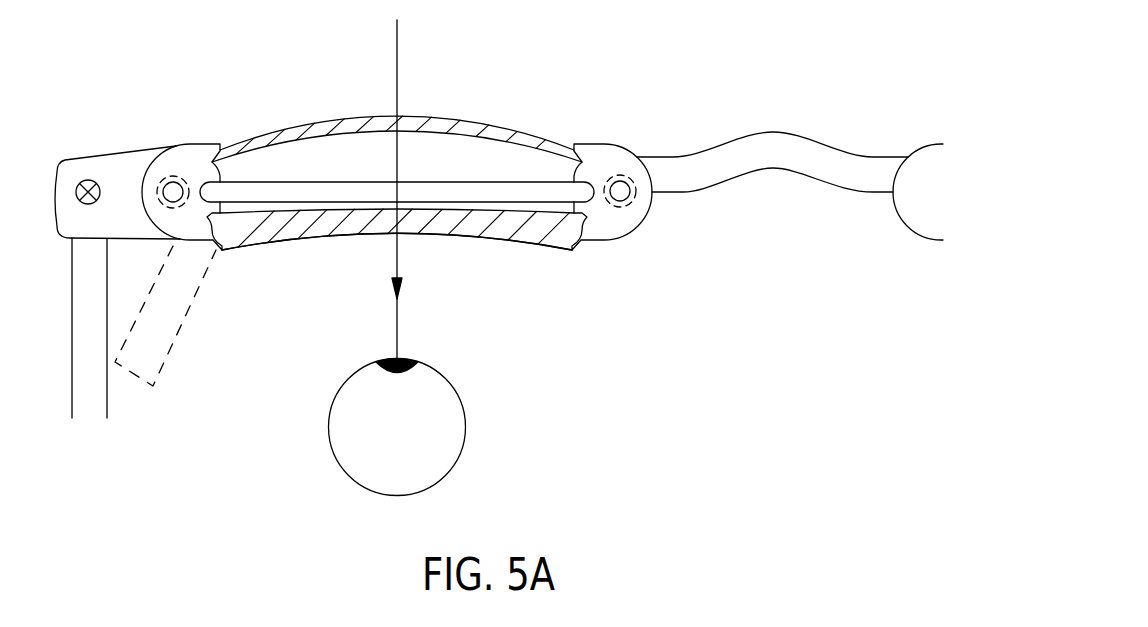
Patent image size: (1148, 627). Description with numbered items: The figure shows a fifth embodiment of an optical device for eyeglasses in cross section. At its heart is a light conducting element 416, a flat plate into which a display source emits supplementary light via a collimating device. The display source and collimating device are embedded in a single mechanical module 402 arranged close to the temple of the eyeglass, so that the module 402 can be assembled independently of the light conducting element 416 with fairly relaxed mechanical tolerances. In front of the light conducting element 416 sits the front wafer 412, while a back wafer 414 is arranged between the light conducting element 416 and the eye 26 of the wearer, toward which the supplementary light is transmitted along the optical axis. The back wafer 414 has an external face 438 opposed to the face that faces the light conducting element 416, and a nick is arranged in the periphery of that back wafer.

The eye 26 is at (437, 448).
The single mechanical module 402 is at (150, 357).
The front wafer 412 is at (360, 117).
The back wafer 414 is at (487, 225).
The light conducting element 416 is at (502, 190).
The external face 438 is at (298, 239).